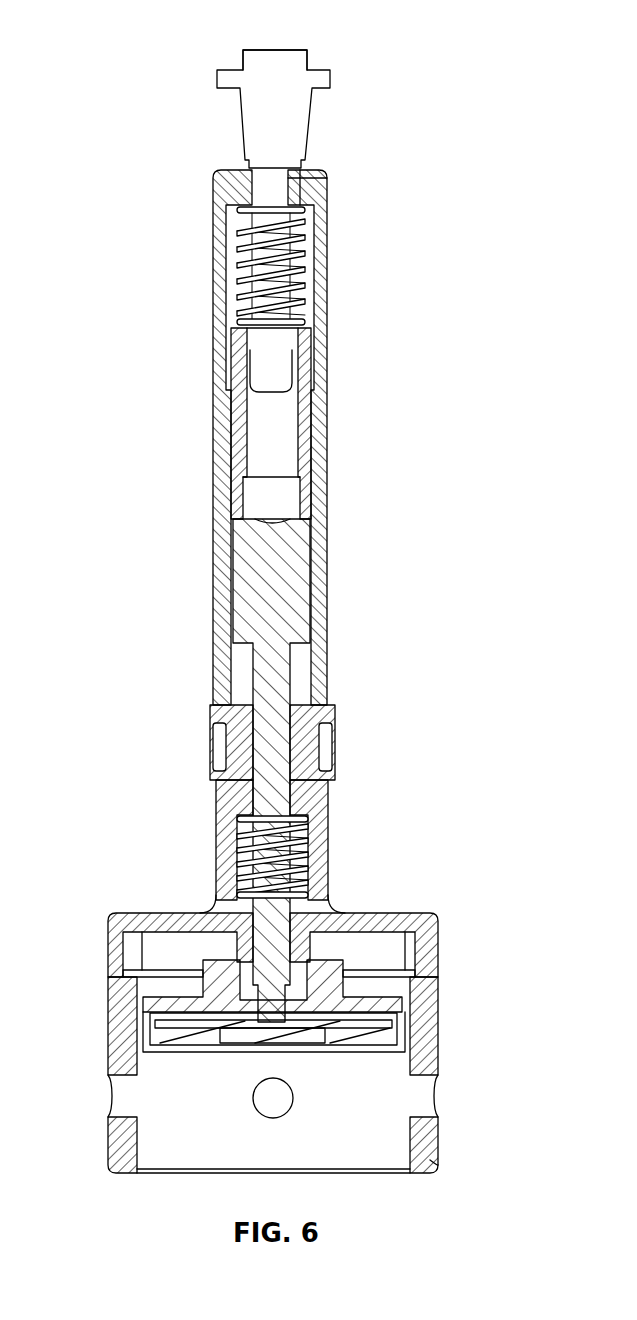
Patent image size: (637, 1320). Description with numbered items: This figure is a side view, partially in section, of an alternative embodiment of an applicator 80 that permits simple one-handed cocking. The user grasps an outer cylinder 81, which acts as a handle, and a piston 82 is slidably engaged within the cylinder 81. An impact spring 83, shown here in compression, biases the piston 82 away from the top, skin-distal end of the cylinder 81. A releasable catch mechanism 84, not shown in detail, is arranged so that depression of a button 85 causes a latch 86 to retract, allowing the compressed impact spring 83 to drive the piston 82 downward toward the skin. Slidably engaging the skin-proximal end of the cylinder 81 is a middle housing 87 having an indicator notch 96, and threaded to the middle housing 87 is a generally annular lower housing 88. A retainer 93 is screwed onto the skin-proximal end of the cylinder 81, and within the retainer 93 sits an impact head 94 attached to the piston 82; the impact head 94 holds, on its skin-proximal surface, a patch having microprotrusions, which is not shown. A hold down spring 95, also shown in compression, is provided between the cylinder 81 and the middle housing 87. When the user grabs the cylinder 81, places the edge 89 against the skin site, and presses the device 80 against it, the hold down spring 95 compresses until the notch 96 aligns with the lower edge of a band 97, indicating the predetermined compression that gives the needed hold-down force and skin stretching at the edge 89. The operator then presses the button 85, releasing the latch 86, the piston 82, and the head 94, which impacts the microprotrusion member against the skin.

The applicator 80 is at (269, 605).
The outer cylinder 81 is at (318, 457).
The piston 82 is at (300, 597).
The impact spring 83 is at (297, 260).
The releasable catch mechanism 84 is at (314, 117).
The button 85 is at (280, 50).
The latch 86 is at (290, 358).
The middle housing 87 is at (395, 913).
The lower housing 88 is at (430, 1046).
The edge 89 is at (430, 1168).
The retainer 93 is at (395, 1003).
The impact head 94 is at (335, 1040).
The hold down spring 95 is at (318, 856).
The indicator notch 96 is at (218, 810).
The band 97 is at (218, 745).